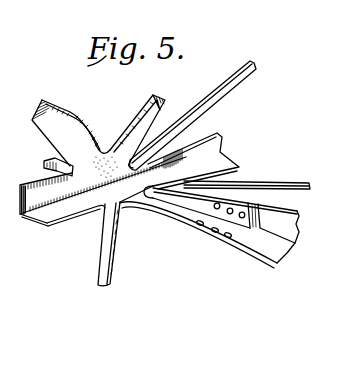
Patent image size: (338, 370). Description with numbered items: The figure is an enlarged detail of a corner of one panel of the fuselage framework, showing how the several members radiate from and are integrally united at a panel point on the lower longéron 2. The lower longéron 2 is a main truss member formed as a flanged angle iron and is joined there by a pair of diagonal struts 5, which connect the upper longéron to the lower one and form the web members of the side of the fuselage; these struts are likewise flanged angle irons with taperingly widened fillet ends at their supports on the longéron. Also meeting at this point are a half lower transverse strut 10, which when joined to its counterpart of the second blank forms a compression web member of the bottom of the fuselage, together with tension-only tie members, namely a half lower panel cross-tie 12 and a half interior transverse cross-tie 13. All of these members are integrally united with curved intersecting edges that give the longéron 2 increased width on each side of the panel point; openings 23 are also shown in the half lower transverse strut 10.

The lower longitudinal chord member or longéron 2 is at (218, 134).
The diagonal strut 5 is at (63, 111).
The half lower transverse strut 10 is at (172, 213).
The half lower panel cross-tie 12 is at (114, 248).
The half interior transverse cross-tie 13 is at (209, 85).
The holes 23 is at (215, 232).